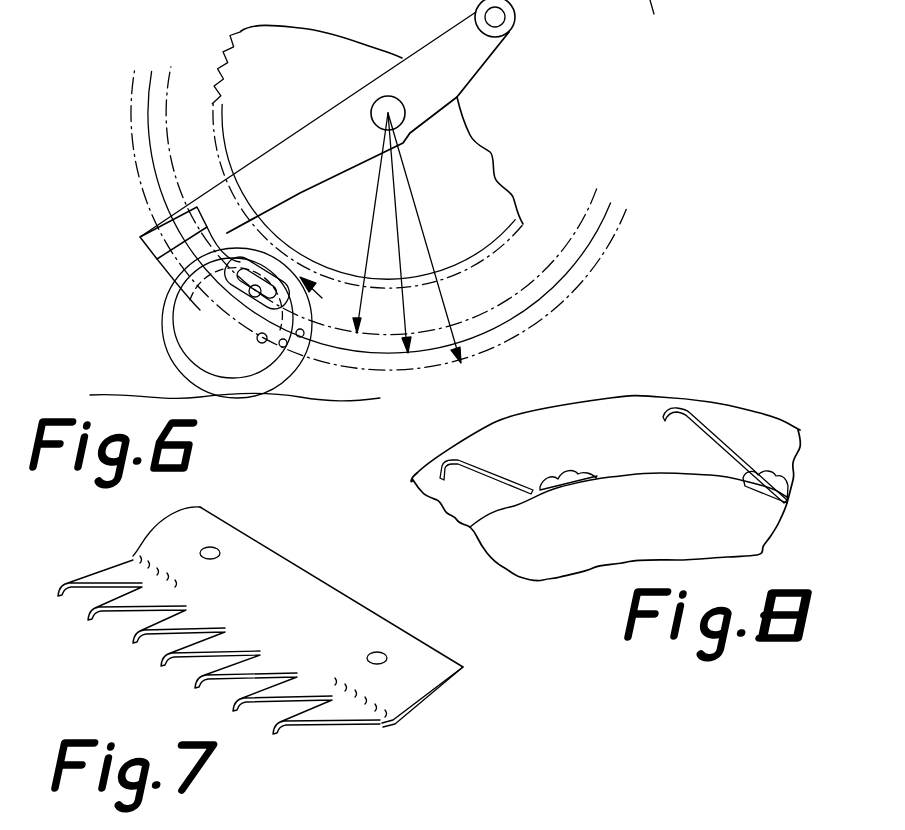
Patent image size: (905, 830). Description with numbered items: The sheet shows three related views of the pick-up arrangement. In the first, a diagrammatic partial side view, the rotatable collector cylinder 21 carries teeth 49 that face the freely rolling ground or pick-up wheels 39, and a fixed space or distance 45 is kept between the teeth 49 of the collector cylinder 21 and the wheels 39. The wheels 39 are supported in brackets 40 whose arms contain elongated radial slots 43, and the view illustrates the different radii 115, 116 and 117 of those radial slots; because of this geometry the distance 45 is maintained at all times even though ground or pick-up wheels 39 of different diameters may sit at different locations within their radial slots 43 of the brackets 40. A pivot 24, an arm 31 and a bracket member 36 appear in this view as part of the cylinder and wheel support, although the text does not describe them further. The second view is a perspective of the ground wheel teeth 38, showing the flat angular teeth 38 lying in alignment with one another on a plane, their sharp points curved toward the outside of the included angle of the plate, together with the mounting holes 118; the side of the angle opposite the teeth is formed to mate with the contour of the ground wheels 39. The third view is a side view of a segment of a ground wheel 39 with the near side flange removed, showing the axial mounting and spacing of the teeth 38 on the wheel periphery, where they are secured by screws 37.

In FIG. 6, the collector cylinder 21 is at (222, 40).
In FIG. 6, the teeth of the collector cylinder 49 is at (222, 60).
In FIG. 6, the crank arm 31 is at (468, 78).
In FIG. 6, the pivot 24 is at (370, 100).
In FIG. 6, the radius of radial slot 115 is at (368, 224).
In FIG. 6, the radius of radial slot 116 is at (400, 240).
In FIG. 6, the radius of radial slot 117 is at (432, 266).
In FIG. 6, the arm bracket 36 is at (140, 238).
In FIG. 6, the brackets 40 is at (210, 315).
In FIG. 6, the ground or pick-up wheels 39 is at (197, 367).
In FIG. 8, the ground or pick-up wheels 39 is at (665, 397).
In FIG. 6, the space or distance 45 is at (327, 307).
In FIG. 6, the radial slots 43 is at (250, 338).
In FIG. 7, the ground wheel teeth 38 is at (305, 568).
In FIG. 8, the ground wheel teeth 38 is at (495, 465).
In FIG. 7, the mounting holes 118 is at (218, 550).
In FIG. 8, the screws 37 is at (572, 467).